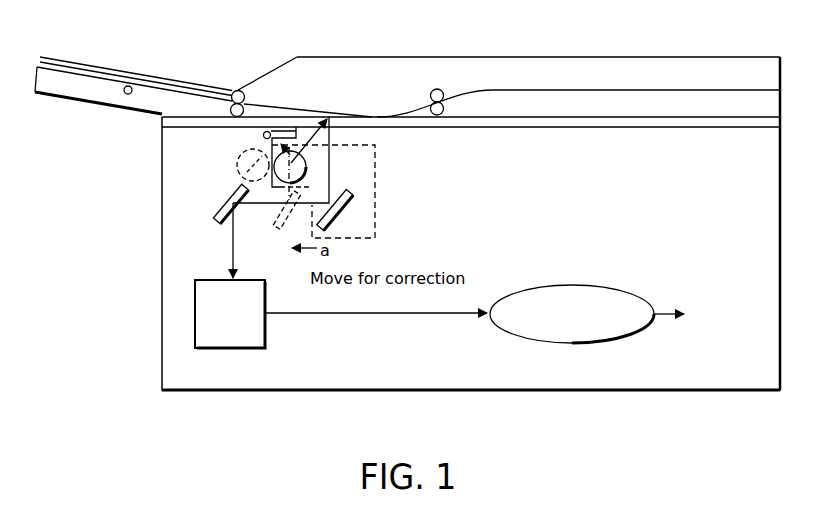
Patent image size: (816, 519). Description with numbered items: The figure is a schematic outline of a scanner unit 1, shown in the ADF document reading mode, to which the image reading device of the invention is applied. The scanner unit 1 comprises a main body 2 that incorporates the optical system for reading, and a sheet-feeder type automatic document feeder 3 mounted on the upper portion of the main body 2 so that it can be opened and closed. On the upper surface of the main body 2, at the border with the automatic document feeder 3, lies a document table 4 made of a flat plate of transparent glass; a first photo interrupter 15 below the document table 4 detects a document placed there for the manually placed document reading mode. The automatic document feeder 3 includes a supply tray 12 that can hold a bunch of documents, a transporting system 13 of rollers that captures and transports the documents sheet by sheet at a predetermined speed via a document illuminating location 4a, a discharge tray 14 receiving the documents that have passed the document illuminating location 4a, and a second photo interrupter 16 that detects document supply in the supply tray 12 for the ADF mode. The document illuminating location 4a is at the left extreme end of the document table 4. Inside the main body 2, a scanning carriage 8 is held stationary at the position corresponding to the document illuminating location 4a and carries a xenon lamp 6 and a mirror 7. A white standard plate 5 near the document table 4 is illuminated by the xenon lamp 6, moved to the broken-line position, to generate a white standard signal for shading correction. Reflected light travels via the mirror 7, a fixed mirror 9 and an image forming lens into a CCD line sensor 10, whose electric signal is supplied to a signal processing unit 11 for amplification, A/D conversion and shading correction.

The scanner unit 1 is at (282, 400).
The main body 2 is at (727, 392).
The automatic document feeder 3 is at (612, 57).
The document table 4 is at (645, 128).
The document illuminating location 4a is at (328, 116).
The white standard plate 5 is at (296, 128).
The xenon lamp 6 is at (305, 172).
The mirror 7 is at (345, 212).
The scanning carriage 8 is at (376, 203).
The mirror 9 is at (217, 205).
The CCD line sensor 10 is at (252, 280).
The signal processing unit 11 is at (610, 287).
The supply tray 12 is at (53, 96).
The transporting system 13 is at (443, 91).
The discharge tray 14 is at (672, 90).
The first photo interrupter 15 is at (263, 136).
The second photo interrupter 16 is at (126, 94).